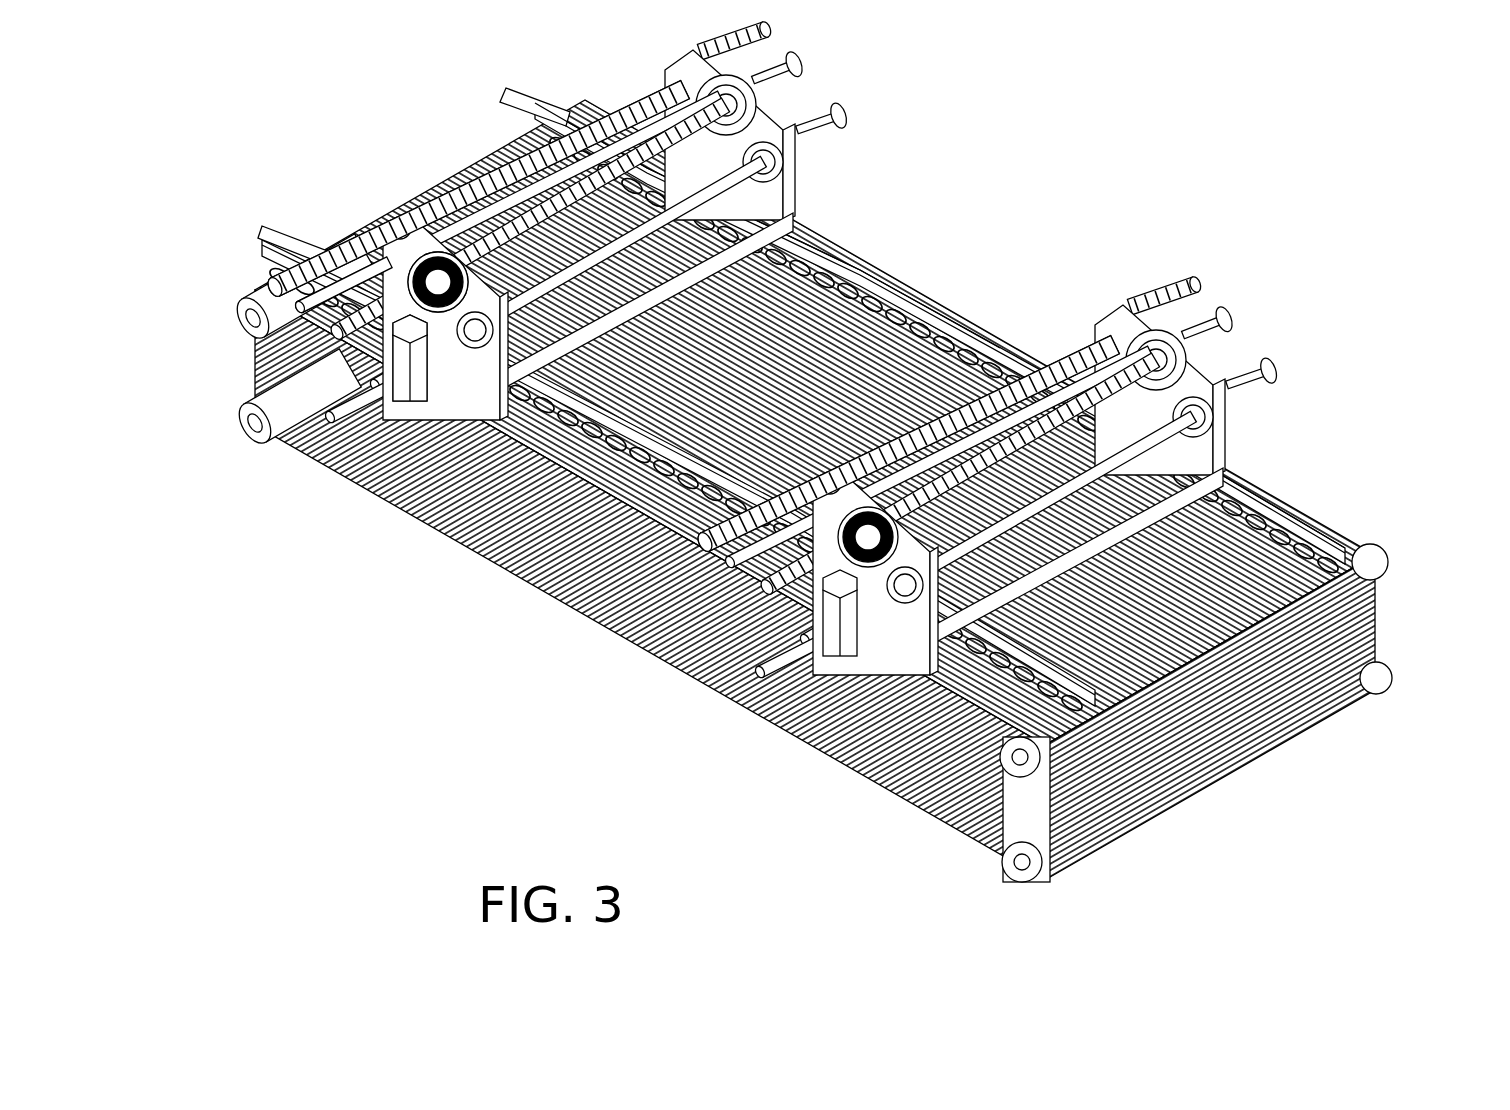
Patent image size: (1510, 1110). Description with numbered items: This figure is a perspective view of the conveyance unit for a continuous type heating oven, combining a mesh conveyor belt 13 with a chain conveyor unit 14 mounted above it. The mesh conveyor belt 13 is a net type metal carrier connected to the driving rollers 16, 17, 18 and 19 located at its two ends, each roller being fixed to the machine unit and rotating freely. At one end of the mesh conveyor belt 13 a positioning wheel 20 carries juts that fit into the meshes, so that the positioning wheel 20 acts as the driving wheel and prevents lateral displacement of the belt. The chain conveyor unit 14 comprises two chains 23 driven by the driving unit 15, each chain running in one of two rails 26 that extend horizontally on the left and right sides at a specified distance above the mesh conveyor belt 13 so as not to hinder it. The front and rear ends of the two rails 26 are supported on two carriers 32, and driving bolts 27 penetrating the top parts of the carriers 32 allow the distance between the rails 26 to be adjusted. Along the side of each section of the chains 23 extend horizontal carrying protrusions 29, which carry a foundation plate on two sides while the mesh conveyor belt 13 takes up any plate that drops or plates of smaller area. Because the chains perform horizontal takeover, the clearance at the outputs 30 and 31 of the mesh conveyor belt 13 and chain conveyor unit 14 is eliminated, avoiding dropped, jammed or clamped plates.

The mesh conveyor belt 13 is at (1272, 784).
The chain conveyor unit 14 is at (1324, 500).
The driving unit 15 is at (440, 330).
The driving roller 16 is at (240, 312).
The driving roller 17 is at (250, 432).
The driving roller 18 is at (1008, 770).
The driving roller 19 is at (1045, 876).
The positioning wheel 20 is at (395, 412).
The chain 23 is at (923, 300).
The rail 26 is at (1252, 497).
The driving bolt 27 is at (293, 312).
The carrying protrusion 29 is at (872, 298).
The output 30 is at (1388, 636).
The output 31 is at (1388, 588).
The carrier 32 is at (393, 232).